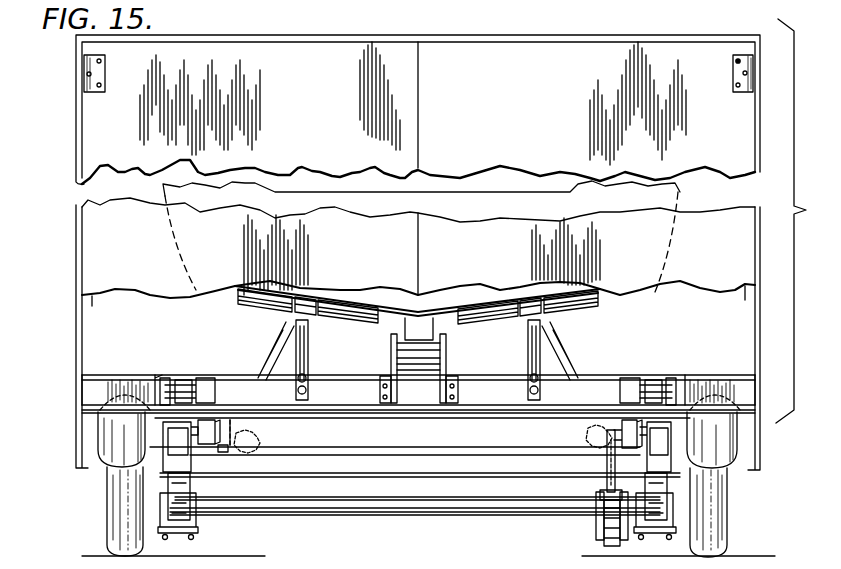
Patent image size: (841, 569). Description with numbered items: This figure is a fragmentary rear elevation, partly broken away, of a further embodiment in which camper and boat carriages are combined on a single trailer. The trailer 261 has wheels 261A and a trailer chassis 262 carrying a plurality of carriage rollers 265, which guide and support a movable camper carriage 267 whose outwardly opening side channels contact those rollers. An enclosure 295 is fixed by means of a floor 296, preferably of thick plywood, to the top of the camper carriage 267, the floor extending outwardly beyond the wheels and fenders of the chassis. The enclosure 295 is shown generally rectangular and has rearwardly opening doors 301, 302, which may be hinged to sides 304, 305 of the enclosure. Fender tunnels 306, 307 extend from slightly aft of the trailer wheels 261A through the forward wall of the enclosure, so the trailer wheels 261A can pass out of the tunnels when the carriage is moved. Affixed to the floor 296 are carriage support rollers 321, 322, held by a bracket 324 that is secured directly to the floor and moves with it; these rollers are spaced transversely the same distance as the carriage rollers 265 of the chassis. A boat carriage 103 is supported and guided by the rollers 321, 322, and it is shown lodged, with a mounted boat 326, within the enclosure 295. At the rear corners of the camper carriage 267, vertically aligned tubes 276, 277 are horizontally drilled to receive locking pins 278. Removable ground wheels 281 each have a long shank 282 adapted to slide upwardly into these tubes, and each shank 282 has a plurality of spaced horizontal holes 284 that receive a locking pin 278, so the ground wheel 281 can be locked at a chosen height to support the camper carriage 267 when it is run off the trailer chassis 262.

The rearwardly opening door 301 is at (342, 60).
The rearwardly opening door 302 is at (531, 56).
The side of the enclosure 304 is at (78, 95).
The side of the enclosure 305 is at (790, 127).
The mounted boat 326 is at (672, 212).
The enclosure 295 is at (78, 246).
The boat carriage 103 is at (497, 392).
The fender tunnel 306 is at (128, 380).
The fender tunnel 307 is at (712, 380).
The floor 296 is at (350, 410).
The carriage support roller 322 is at (212, 384).
The carriage support roller 321 is at (630, 382).
The bracket 324 is at (655, 382).
The trailer chassis 262 is at (350, 460).
The movable carriage (camper carriage) 267 is at (460, 430).
The locking pin 278 is at (210, 452).
The carriage roller 265 is at (610, 432).
The vertically aligned tube 276 is at (240, 450).
The vertically aligned tube 277 is at (606, 454).
The shank 282 is at (604, 488).
The spaced horizontal holes 284 is at (600, 500).
The removable ground wheel 281 is at (604, 538).
The trailer 261 is at (132, 478).
The wheels 261A is at (728, 504).